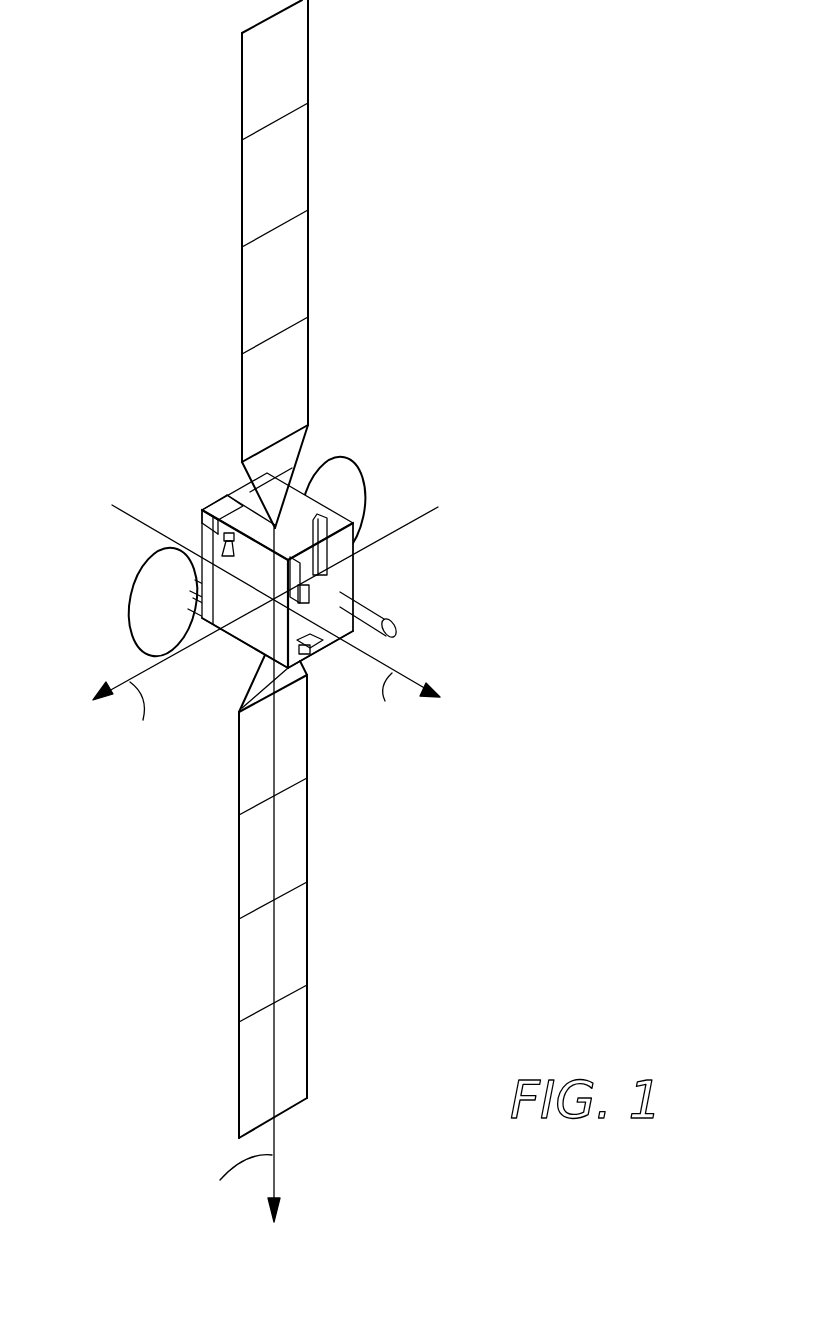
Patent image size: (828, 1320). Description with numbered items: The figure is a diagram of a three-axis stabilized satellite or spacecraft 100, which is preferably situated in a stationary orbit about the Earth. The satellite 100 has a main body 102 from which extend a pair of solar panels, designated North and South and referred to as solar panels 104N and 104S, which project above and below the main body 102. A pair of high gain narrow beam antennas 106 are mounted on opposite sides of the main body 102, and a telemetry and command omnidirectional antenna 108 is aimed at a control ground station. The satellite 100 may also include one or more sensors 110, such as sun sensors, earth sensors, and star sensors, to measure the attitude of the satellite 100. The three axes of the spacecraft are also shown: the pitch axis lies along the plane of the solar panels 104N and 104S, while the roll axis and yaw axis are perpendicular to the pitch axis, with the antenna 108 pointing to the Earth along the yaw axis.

The satellite 100 is at (274, 629).
The main body 102 is at (346, 578).
The North solar panel 104N is at (288, 168).
The South solar panel 104S is at (298, 940).
The high gain narrow beam antenna 106 is at (150, 587).
The telemetry and command omnidirectional antenna 108 is at (380, 618).
The sensor 110 is at (228, 514).